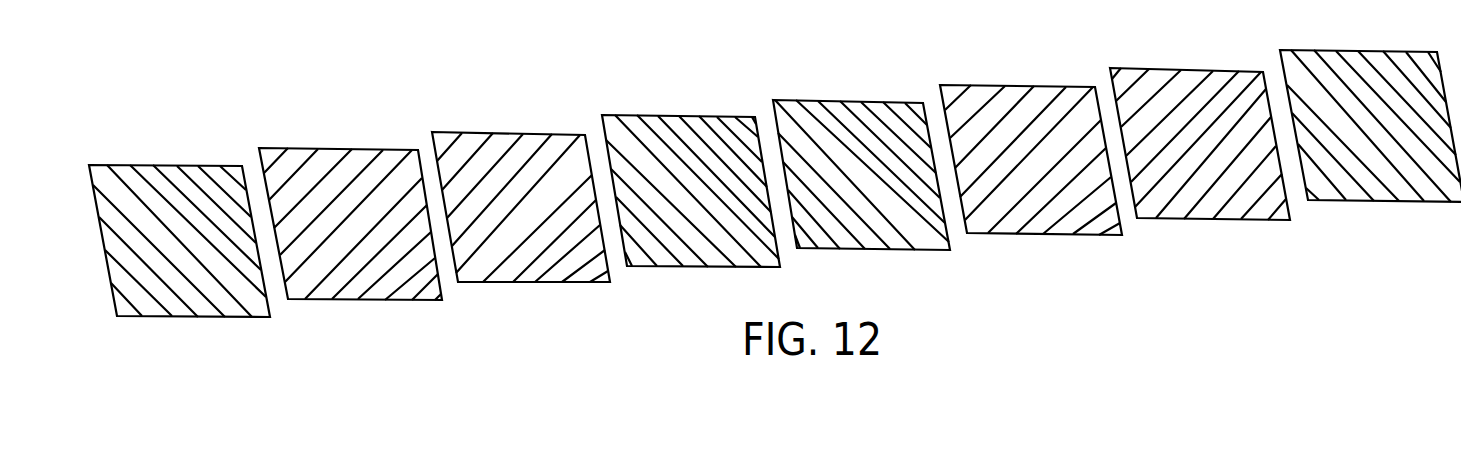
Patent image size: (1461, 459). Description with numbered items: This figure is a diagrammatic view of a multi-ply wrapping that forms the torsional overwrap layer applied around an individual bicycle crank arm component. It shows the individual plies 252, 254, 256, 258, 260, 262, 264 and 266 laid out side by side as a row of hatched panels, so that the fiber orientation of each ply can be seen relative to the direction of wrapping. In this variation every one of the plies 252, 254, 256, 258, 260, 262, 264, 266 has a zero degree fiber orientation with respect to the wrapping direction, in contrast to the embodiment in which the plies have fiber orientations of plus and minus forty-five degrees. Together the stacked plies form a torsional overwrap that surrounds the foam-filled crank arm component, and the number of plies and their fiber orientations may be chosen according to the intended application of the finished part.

The ply 252 is at (163, 172).
The ply 254 is at (343, 180).
The ply 256 is at (500, 148).
The ply 258 is at (673, 138).
The ply 260 is at (845, 115).
The ply 262 is at (1015, 113).
The ply 264 is at (1188, 90).
The ply 266 is at (1373, 83).